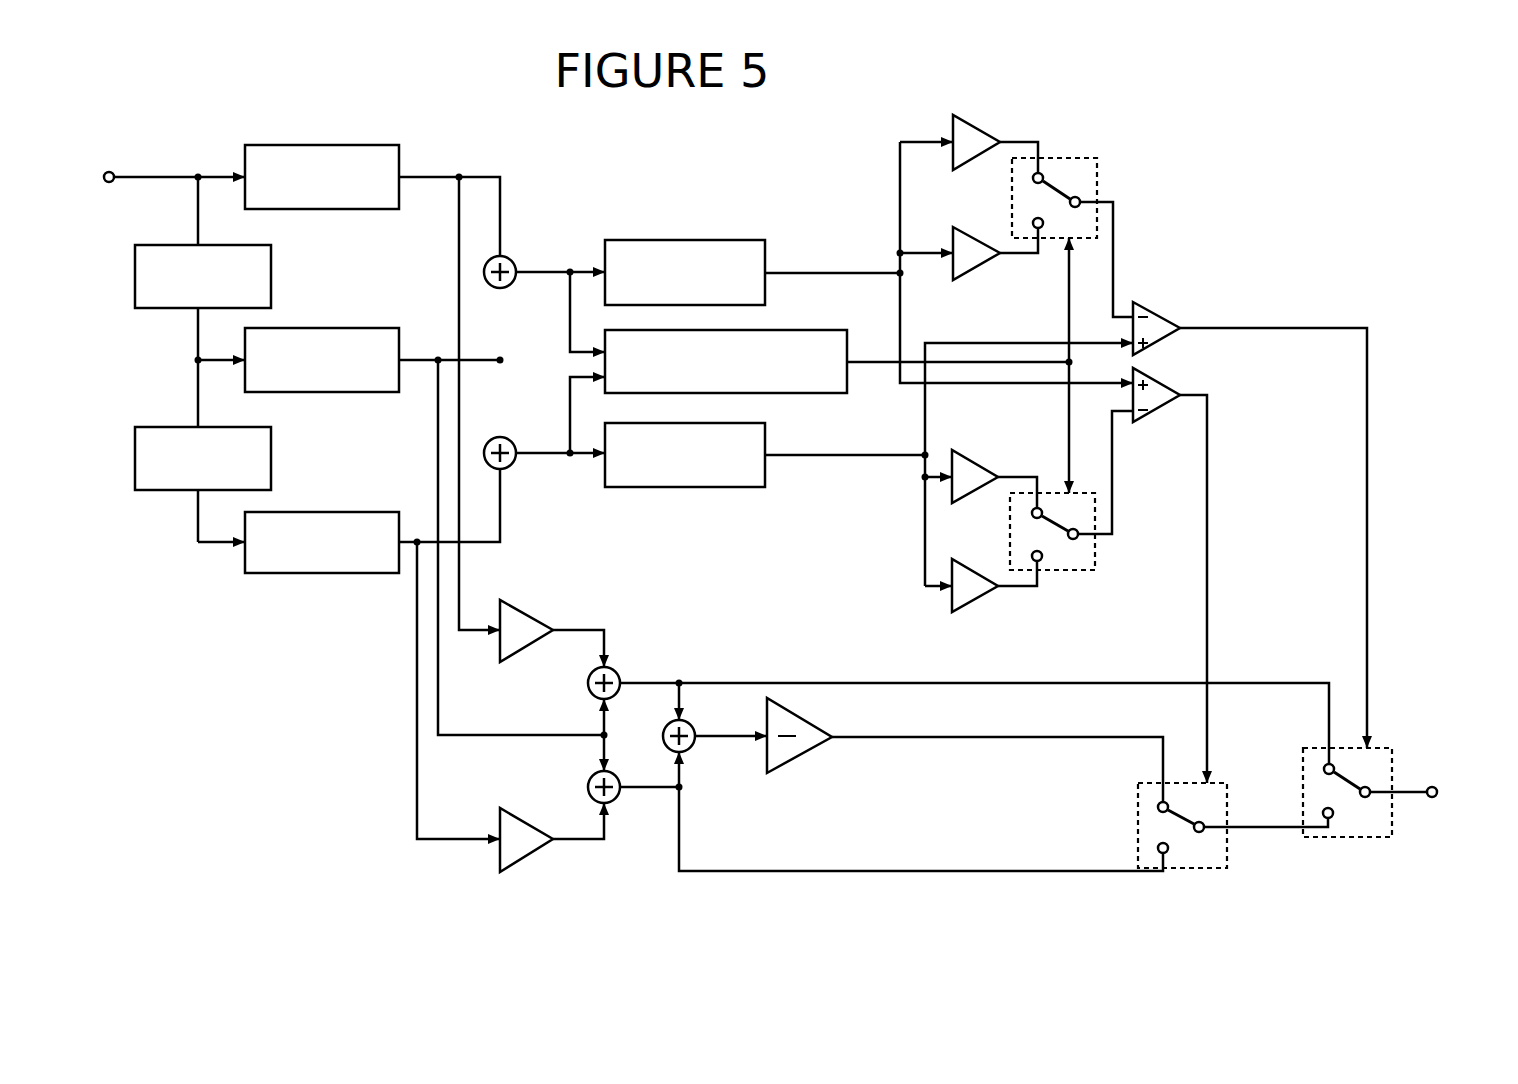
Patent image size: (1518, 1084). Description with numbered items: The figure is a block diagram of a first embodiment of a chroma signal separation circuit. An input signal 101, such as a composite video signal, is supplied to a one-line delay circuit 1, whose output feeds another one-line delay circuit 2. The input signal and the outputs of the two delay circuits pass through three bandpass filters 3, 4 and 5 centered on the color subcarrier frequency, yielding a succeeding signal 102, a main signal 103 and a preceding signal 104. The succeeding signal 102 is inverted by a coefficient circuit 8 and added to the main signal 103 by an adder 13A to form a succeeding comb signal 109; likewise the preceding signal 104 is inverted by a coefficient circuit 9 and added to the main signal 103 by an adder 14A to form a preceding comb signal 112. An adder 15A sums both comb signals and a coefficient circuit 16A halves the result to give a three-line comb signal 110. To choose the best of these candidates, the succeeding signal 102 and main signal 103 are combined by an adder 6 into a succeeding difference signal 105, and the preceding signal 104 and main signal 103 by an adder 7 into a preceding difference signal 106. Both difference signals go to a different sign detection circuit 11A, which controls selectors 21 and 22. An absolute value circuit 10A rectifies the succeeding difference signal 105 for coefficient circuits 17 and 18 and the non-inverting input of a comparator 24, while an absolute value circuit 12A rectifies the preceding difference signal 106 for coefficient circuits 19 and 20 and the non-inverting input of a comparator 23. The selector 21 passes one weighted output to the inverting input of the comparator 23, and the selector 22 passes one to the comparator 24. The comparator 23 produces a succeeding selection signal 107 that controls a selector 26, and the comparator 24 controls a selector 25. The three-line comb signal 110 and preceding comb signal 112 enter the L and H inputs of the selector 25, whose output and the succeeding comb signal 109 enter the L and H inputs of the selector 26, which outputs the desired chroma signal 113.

The input signal 101 is at (140, 177).
The one-line delay circuit 1 is at (170, 245).
The one-line delay circuit 2 is at (170, 427).
The bandpass filter 3 is at (340, 145).
The bandpass filter 4 is at (340, 328).
The bandpass filter 5 is at (340, 512).
The succeeding signal 102 is at (415, 177).
The main signal 103 is at (423, 362).
The preceding signal 104 is at (417, 699).
The adder 6 is at (508, 258).
The adder 7 is at (508, 438).
The succeeding difference signal 105 is at (550, 270).
The preceding difference signal 106 is at (548, 456).
The absolute value circuit 10A is at (710, 240).
The different sign detection circuit 11A is at (803, 330).
The absolute value circuit 12A is at (715, 488).
The coefficient circuit 17 is at (975, 130).
The coefficient circuit 18 is at (965, 280).
The coefficient circuit 19 is at (975, 465).
The coefficient circuit 20 is at (968, 612).
The selector 21 is at (1060, 158).
The selector 22 is at (1060, 572).
The comparator 23 is at (1157, 312).
The comparator 24 is at (1157, 380).
The succeeding selection signal 107 is at (1315, 328).
The coefficient circuit 8 is at (525, 616).
The coefficient circuit 9 is at (525, 825).
The adder 13A is at (613, 670).
The adder 14A is at (616, 800).
The adder 15A is at (690, 722).
The coefficient circuit 16A is at (767, 758).
The succeeding comb signal 109 is at (780, 683).
The three-line comb signal 110 is at (1000, 740).
The preceding comb signal 112 is at (820, 870).
The selector 25 is at (1138, 820).
The selector 26 is at (1315, 838).
The chroma signal 113 is at (1405, 787).